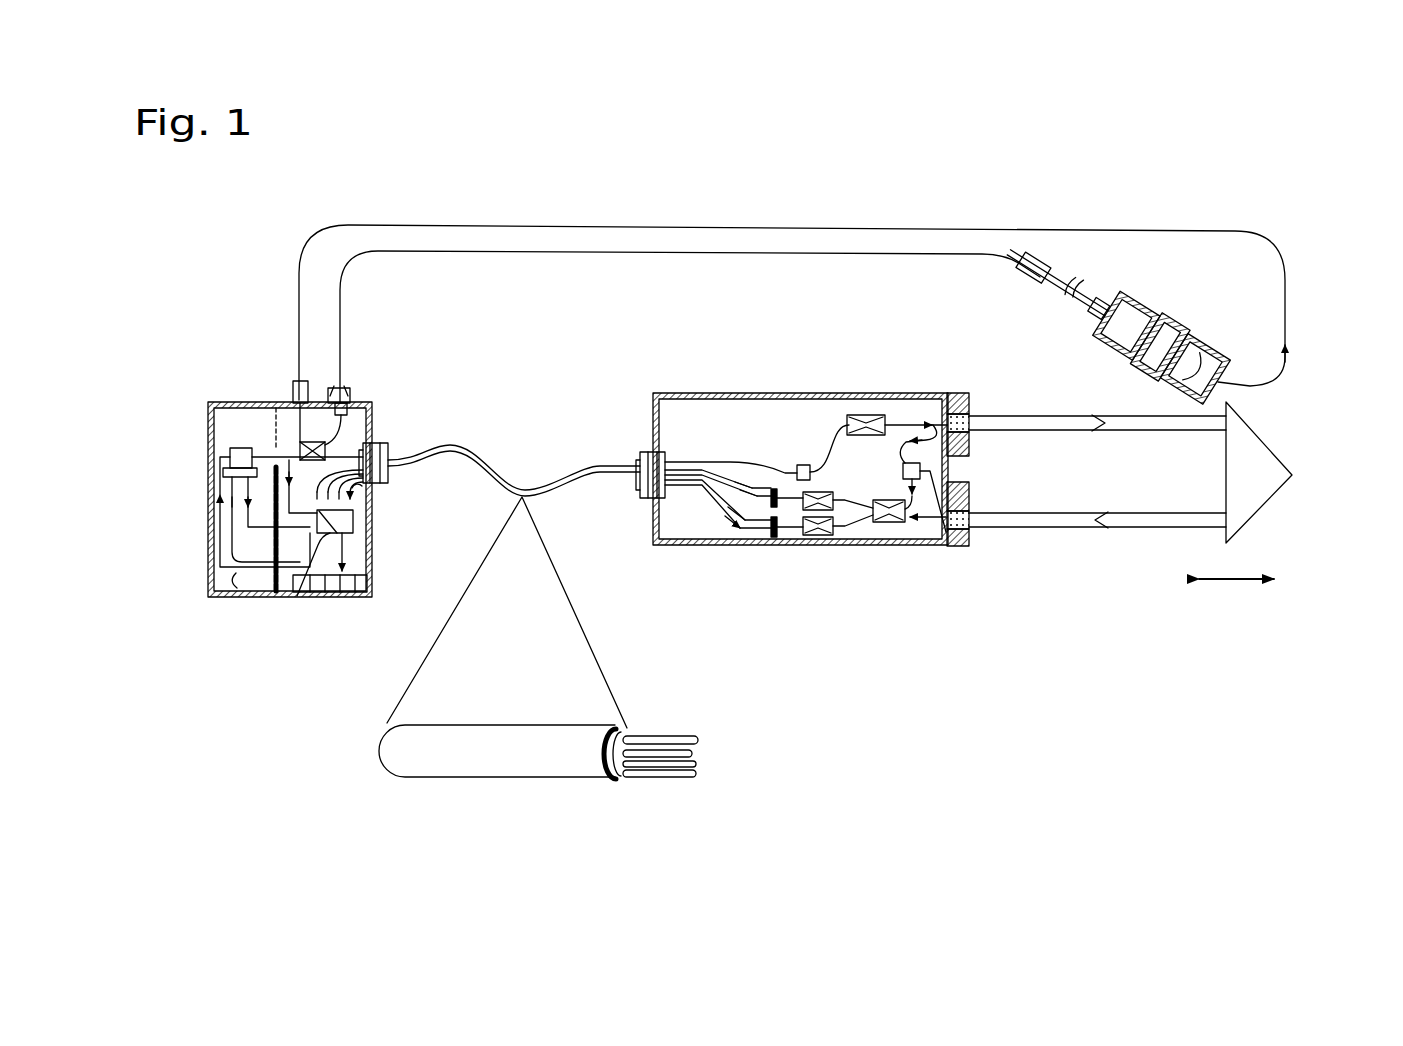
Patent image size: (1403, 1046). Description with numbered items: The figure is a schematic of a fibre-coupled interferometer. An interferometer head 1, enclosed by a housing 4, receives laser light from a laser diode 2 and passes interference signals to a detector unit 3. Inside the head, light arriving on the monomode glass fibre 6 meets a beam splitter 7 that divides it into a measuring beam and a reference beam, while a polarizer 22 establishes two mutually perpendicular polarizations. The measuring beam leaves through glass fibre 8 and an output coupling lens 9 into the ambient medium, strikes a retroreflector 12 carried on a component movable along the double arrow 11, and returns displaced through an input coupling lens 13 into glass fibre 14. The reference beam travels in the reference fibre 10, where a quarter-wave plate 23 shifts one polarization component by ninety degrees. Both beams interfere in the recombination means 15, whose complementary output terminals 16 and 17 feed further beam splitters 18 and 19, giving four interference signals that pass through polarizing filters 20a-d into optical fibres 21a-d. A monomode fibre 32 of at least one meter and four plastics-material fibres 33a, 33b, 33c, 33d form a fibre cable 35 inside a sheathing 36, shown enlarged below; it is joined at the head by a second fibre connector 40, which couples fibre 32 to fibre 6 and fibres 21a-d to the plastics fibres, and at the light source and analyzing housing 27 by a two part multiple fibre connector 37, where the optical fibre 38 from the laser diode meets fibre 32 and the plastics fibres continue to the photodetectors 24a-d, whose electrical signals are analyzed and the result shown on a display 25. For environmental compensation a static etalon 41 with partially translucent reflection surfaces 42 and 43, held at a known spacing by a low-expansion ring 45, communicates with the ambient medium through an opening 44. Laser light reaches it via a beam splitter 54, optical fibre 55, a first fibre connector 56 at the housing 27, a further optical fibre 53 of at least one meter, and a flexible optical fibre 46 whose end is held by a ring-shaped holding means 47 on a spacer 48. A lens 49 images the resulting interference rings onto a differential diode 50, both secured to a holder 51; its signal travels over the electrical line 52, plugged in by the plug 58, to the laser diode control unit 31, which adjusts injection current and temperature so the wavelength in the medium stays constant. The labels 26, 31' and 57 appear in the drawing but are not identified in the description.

The interferometer head 1 is at (801, 558).
The laser diode 2 is at (230, 455).
The detector unit 3 is at (355, 530).
The housing 4 is at (726, 395).
The optical fibre 6 is at (683, 458).
The beam splitter 7 is at (853, 415).
The glass fibre 8 is at (892, 418).
The output coupling lens 9 is at (962, 395).
The reference fibre 10 is at (912, 427).
The double arrow 11 is at (1240, 583).
The retroreflector 12 is at (1262, 510).
The input coupling lens 13 is at (973, 530).
The glass fibre 14 is at (918, 546).
The recombination means 15 is at (893, 546).
The complementary output terminal 16 is at (842, 546).
The complementary output terminal 17 is at (865, 546).
The beam splitter 18 is at (790, 542).
The beam splitter 19 is at (808, 546).
The polarizing filters 20a-d is at (775, 530).
The optical fibres 21a-d is at (724, 490).
The polarizer 22 is at (800, 464).
The quarter-wave plate 23 is at (935, 546).
The photodetectors 24a-d is at (362, 494).
The display 25 is at (327, 596).
The housing 26 is at (248, 596).
The light source and analyzing housing 27 is at (260, 596).
The laser diode control unit 31 is at (286, 639).
The sensor base 31' is at (182, 489).
The optical fibre 32 is at (698, 764).
The plastics-material optical fibre 33a is at (655, 740).
The plastics-material optical fibre 33b is at (692, 738).
The plastics-material optical fibre 33c is at (643, 775).
The plastics-material optical fibre 33d is at (657, 773).
The fibre cable 35 is at (452, 446).
The sheathing 36 is at (470, 757).
The multiple fibre connector 37 is at (388, 440).
The optical fibre 38 is at (377, 440).
The second fibre connector 40 is at (640, 450).
The etalon 41 is at (1195, 335).
The reflection surface 42 is at (1197, 315).
The reflection surface 43 is at (1205, 345).
The opening 44 is at (1140, 378).
The ring 45 is at (1205, 335).
The flexible optical fibre 46 is at (1088, 305).
The ring-shaped holding means 47 is at (1122, 312).
The spacer 48 is at (1150, 312).
The lens 49 is at (1222, 370).
The differential diode 50 is at (1287, 362).
The holder 51 is at (1215, 357).
The electrical line 52 is at (298, 262).
The further optical fibre 53 is at (415, 250).
The beam splitter 54 is at (293, 398).
The optical fibre 55 is at (348, 400).
The first fibre connector 56 is at (338, 390).
The coupling 57 is at (1032, 262).
The plug 58 is at (300, 445).